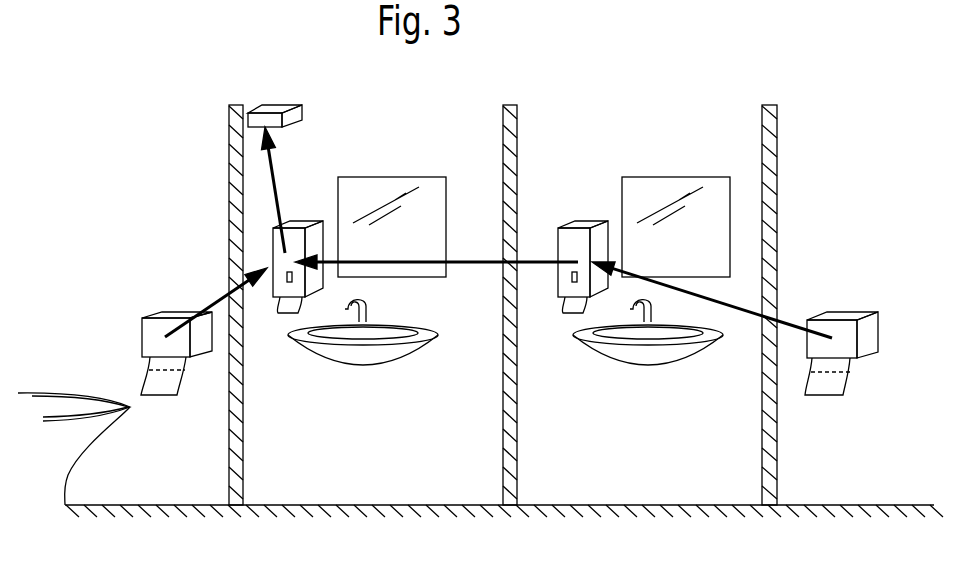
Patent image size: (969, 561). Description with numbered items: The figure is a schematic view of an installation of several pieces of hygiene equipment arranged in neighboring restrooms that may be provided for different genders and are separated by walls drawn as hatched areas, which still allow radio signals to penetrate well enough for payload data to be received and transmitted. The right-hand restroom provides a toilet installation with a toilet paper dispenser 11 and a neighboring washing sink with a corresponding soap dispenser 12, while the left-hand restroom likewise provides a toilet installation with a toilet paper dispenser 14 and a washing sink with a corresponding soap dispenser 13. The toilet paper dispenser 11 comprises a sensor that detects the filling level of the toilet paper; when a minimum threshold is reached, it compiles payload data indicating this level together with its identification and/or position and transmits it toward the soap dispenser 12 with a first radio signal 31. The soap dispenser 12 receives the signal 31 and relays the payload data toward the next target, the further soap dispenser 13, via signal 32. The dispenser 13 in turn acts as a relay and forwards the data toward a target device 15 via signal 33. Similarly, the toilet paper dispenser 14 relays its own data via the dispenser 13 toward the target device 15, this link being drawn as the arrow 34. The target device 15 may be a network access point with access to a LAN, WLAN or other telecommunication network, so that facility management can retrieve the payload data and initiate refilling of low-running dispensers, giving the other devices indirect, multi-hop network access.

The toilet paper dispenser 11 is at (852, 312).
The soap dispenser 12 is at (593, 221).
The soap dispenser 13 is at (305, 221).
The toilet paper dispenser 14 is at (177, 312).
The target device 15 is at (283, 105).
The first radio signal 31 is at (735, 309).
The signal 32 is at (468, 264).
The signal 33 is at (270, 178).
The communication link from fourth dispenser to third dispenser 34 is at (252, 290).